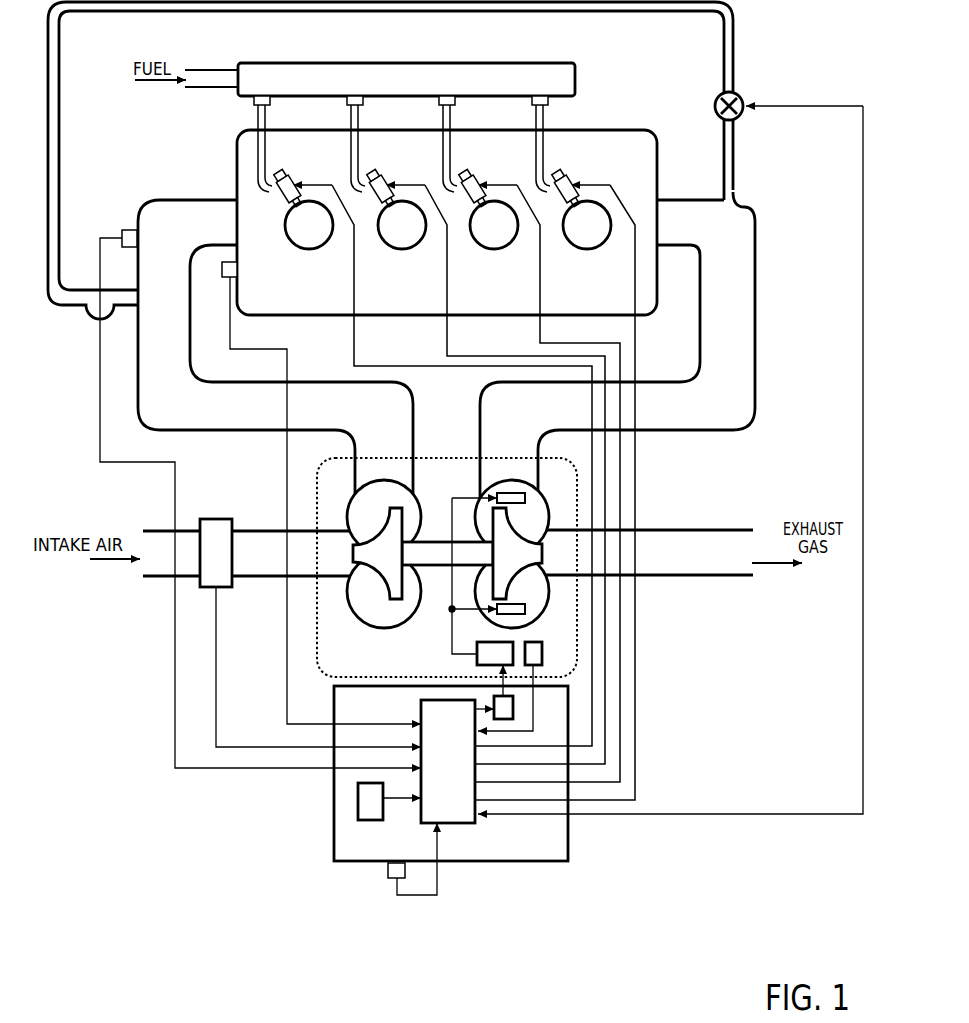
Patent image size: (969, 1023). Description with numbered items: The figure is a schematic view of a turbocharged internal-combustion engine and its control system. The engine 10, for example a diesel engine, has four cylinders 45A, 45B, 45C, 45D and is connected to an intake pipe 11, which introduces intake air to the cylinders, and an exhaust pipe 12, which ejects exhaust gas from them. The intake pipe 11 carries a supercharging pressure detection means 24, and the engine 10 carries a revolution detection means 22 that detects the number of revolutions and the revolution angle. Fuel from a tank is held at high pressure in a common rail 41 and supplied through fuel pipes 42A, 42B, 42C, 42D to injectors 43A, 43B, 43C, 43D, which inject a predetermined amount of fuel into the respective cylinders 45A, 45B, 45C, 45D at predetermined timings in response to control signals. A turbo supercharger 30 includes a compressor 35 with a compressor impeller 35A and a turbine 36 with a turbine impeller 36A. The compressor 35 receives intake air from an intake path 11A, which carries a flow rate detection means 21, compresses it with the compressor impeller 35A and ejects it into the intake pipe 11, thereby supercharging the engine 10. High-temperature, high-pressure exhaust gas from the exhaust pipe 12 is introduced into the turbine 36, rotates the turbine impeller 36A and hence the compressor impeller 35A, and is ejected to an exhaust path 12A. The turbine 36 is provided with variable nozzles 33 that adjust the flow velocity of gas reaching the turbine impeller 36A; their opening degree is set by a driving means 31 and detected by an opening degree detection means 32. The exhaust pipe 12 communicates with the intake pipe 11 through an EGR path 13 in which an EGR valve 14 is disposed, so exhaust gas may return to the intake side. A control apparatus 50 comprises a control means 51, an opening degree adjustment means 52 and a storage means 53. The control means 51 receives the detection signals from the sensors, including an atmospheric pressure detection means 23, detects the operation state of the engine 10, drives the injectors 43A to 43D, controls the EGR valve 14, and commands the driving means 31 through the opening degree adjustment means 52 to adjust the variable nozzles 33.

The engine 10 is at (232, 162).
The intake pipe 11 is at (180, 197).
The intake path 11A is at (252, 527).
The exhaust pipe 12 is at (676, 197).
The exhaust path 12A is at (742, 526).
The EGR path 13 is at (720, 143).
The EGR valve 14 is at (744, 94).
The flow rate detection means 21 is at (216, 517).
The revolution detection means 22 is at (220, 282).
The atmospheric pressure detection means 23 is at (385, 870).
The supercharging pressure detection means 24 is at (126, 226).
The turbo supercharger 30 is at (437, 452).
The driving means 31 is at (515, 640).
The opening degree detection means 32 is at (545, 655).
The variable nozzles 33 is at (535, 497).
The compressor 35 is at (345, 605).
The compressor impeller 35A is at (348, 554).
The turbine 36 is at (556, 508).
The turbine impeller 36A is at (550, 552).
The common rail 41 is at (330, 60).
The fuel pipe 42A is at (255, 122).
The fuel pipe 42B is at (348, 122).
The fuel pipe 42C is at (440, 122).
The fuel pipe 42D is at (533, 122).
The injector 43A is at (297, 177).
The injector 43B is at (390, 177).
The injector 43C is at (482, 177).
The injector 43D is at (575, 177).
The cylinder 45A is at (306, 251).
The cylinder 45B is at (399, 251).
The cylinder 45C is at (491, 251).
The cylinder 45D is at (584, 251).
The control apparatus 50 is at (331, 803).
The control means 51 is at (458, 826).
The opening degree adjustment means 52 is at (516, 710).
The storage means 53 is at (362, 822).